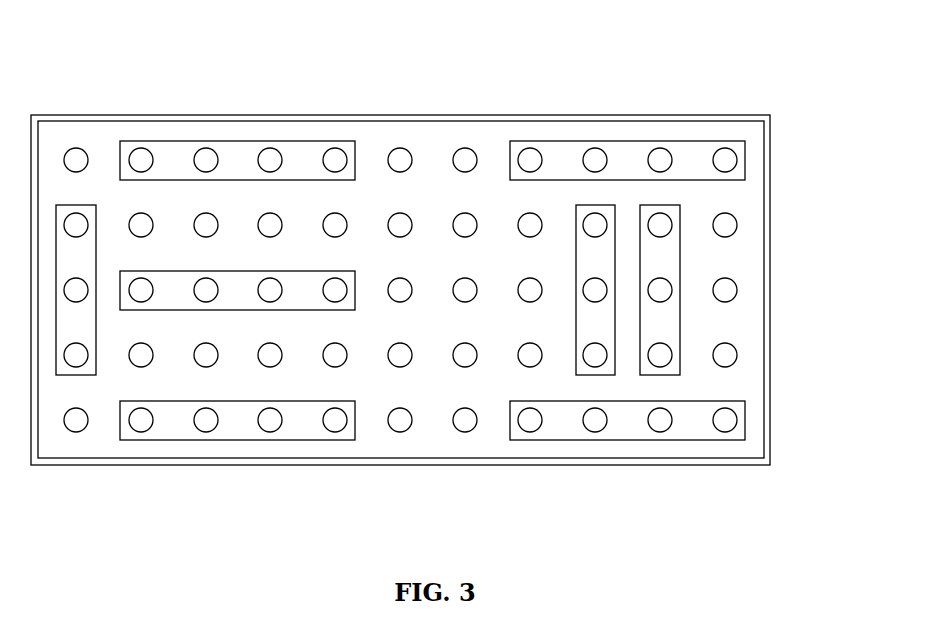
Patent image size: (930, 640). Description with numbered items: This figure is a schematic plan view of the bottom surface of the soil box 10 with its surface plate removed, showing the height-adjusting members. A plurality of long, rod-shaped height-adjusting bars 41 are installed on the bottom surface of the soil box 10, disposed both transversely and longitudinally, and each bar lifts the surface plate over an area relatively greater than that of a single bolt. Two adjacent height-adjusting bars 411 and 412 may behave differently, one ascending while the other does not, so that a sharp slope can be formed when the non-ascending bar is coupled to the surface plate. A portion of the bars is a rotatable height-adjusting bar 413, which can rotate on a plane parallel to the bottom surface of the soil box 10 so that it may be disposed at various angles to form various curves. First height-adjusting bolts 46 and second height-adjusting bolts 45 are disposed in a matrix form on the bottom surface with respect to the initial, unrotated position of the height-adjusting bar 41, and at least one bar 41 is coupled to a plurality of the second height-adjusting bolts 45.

The soil box 10 is at (770, 252).
The height-adjusting bar 41 is at (436, 229).
The height-adjusting bar 411 is at (672, 205).
The height-adjusting bar 412 is at (608, 205).
The rotatable height-adjusting bar 413 is at (303, 270).
The second height-adjusting bolt 45 is at (270, 148).
The first height-adjusting bolt 46 is at (270, 343).